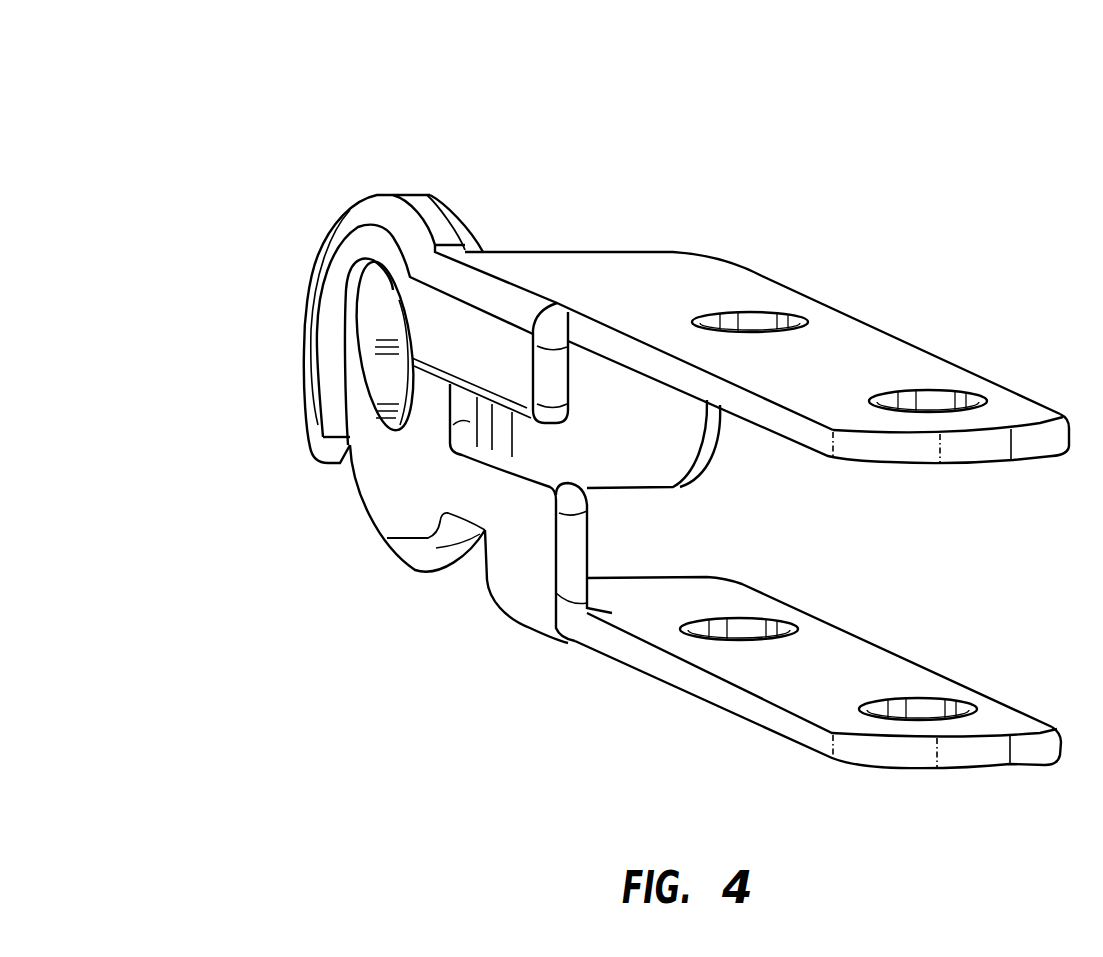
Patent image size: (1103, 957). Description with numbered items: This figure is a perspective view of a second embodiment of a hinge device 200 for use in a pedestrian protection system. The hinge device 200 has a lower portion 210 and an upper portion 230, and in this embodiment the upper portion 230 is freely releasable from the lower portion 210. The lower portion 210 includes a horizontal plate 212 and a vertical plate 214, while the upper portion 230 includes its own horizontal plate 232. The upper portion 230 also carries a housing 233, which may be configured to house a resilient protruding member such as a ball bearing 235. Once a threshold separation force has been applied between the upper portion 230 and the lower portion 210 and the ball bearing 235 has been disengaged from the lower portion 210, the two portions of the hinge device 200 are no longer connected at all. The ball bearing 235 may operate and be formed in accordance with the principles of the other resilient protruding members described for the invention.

The hinge device 200 is at (473, 131).
The lower portion 210 is at (437, 627).
The horizontal plate 212 is at (828, 702).
The vertical plate 214 is at (373, 505).
The upper portion 230 is at (644, 222).
The horizontal plate 232 is at (870, 353).
The housing 233 is at (660, 440).
The ball bearing 235 is at (392, 380).